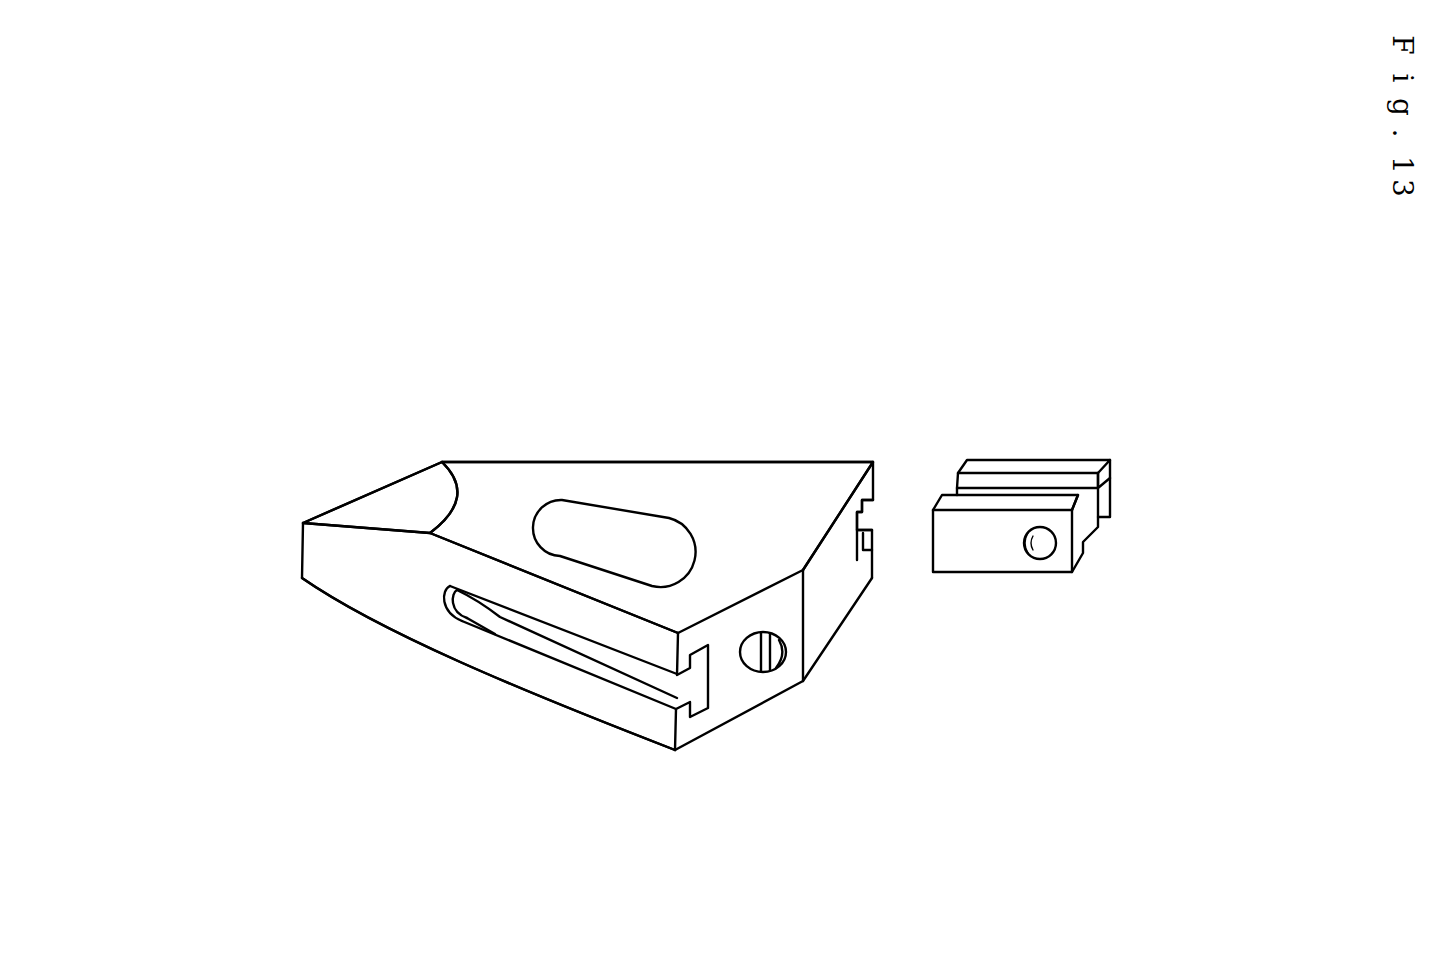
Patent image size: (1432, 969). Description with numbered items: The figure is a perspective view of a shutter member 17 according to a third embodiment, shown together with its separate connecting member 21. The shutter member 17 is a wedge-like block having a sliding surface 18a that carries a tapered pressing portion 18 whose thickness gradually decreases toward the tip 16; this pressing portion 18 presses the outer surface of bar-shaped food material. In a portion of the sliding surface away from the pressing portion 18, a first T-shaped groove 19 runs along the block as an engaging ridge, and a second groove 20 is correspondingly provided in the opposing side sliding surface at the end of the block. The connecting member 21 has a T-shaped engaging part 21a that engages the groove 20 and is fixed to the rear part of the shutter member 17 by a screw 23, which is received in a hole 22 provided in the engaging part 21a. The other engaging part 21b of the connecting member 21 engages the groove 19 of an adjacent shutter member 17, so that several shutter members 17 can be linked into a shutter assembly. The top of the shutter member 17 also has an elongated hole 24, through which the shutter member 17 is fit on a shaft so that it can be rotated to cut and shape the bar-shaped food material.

The tip 16 is at (302, 546).
The shutter member 17 is at (645, 482).
The tapered pressing portion 18 is at (390, 737).
The sliding surface 18a is at (338, 563).
The first T-shaped groove 19 is at (512, 803).
The second groove 20 is at (998, 388).
The connecting member 21 is at (1240, 464).
The T-shaped engaging part 21a is at (1005, 502).
The engaging part 21b is at (1028, 462).
The hole 22 is at (1094, 620).
The screw 23 is at (820, 770).
The elongated hole 24 is at (588, 538).